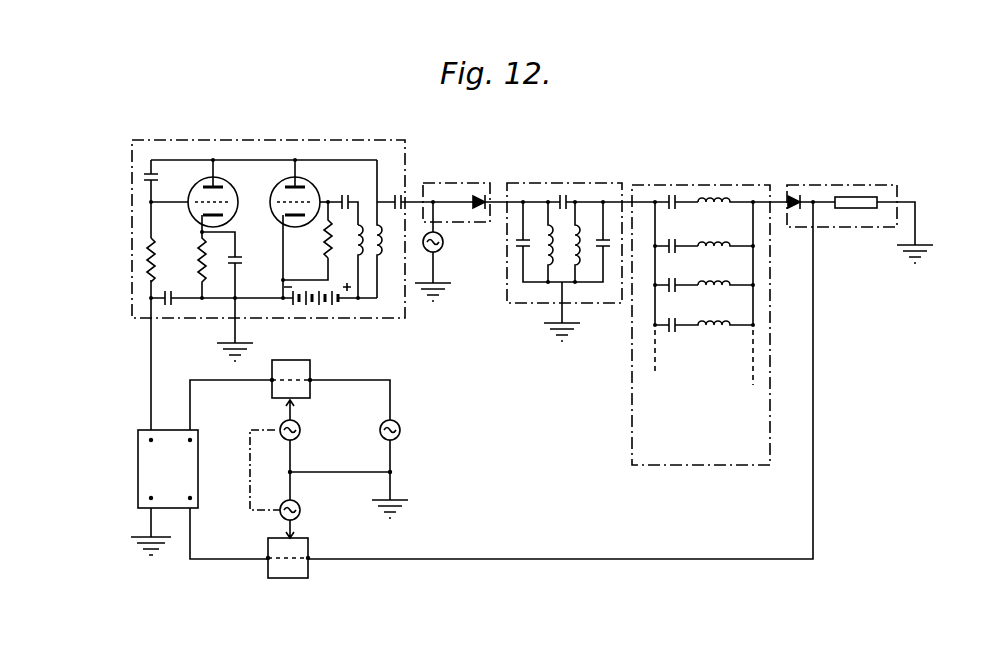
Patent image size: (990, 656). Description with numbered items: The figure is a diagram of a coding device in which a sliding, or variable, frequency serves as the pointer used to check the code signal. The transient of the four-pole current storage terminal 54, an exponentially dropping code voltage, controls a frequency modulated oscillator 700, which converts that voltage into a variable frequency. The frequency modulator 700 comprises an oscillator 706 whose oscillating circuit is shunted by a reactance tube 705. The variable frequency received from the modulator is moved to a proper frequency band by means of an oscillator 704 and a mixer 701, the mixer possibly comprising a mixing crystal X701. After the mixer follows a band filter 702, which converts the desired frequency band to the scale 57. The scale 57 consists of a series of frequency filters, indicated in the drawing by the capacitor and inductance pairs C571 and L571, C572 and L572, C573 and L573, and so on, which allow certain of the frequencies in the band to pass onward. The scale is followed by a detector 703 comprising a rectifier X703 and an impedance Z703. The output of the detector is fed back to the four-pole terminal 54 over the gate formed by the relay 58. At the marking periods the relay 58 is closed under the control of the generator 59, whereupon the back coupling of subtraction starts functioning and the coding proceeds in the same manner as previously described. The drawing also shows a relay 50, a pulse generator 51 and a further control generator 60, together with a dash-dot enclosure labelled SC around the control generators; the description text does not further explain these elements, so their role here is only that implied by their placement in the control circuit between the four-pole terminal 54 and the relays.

The frequency modulated oscillator 700 is at (208, 140).
The reactance tube 705 is at (199, 185).
The oscillator 706 is at (318, 190).
The mixer 701 is at (423, 183).
The mixing crystal X701 is at (487, 194).
The oscillator 704 is at (444, 239).
The band filter 702 is at (594, 183).
The capacitor C571 is at (683, 198).
The inductance L571 is at (713, 200).
The capacitor C572 is at (666, 244).
The inductance L572 is at (707, 245).
The capacitor C573 is at (666, 284).
The inductance L573 is at (707, 285).
The scale 57 is at (706, 325).
The detector 703 is at (858, 201).
The rectifier X703 is at (808, 194).
The impedance Z703 is at (845, 209).
The four-pole current storage terminal 54 is at (113, 462).
The relay 50 is at (298, 360).
The control generator 60 is at (303, 434).
The pulse generator 51 is at (401, 432).
The generator 59 is at (304, 512).
The relay 58 is at (307, 546).
The scanning circuit SC is at (249, 469).